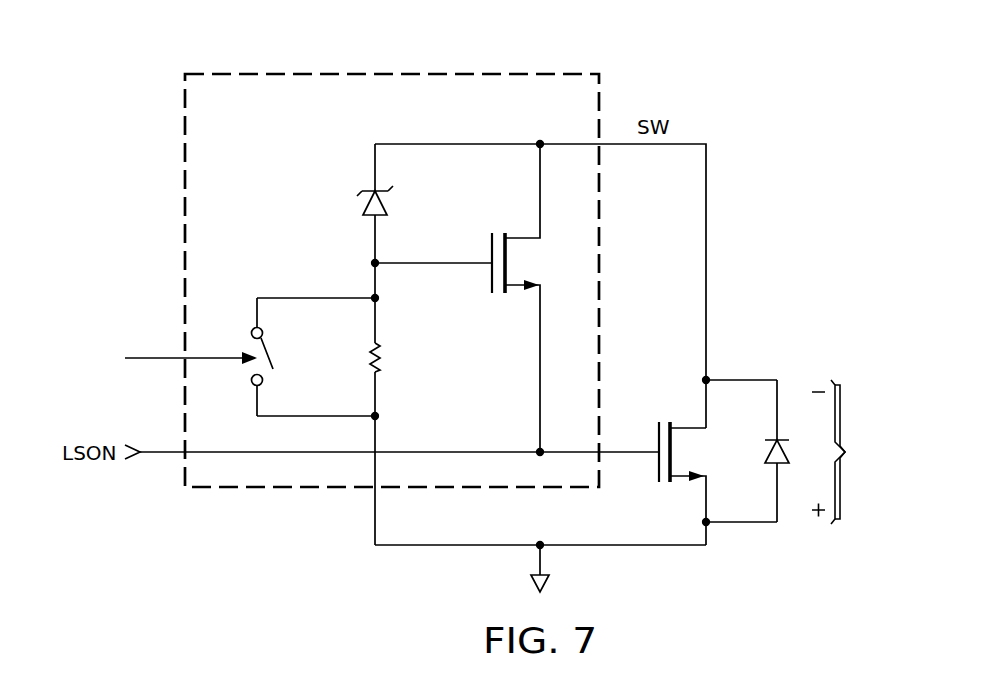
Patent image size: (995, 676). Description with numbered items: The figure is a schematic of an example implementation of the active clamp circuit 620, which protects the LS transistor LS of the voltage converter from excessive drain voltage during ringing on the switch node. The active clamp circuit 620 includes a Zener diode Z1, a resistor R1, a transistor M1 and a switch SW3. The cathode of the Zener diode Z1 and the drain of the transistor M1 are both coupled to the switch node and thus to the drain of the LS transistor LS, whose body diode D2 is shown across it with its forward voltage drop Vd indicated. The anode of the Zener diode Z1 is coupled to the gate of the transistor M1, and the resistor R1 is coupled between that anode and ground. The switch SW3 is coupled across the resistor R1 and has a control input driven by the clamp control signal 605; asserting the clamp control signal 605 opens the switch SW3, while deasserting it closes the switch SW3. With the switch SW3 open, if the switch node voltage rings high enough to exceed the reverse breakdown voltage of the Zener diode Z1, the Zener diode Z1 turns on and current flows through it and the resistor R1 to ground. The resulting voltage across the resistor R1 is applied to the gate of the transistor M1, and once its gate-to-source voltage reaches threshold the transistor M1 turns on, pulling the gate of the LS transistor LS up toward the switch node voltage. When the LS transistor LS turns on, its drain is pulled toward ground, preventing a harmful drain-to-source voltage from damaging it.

The active clamp circuit 620 is at (331, 70).
The clamp control signal 605 is at (163, 355).
The Zener diode Z1 is at (390, 206).
The resistor R1 is at (392, 357).
The transistor M1 is at (531, 298).
The switch SW3 is at (290, 357).
The LS transistor LS is at (693, 483).
The body diode D2 is at (795, 451).
The forward voltage drop Vd is at (847, 452).